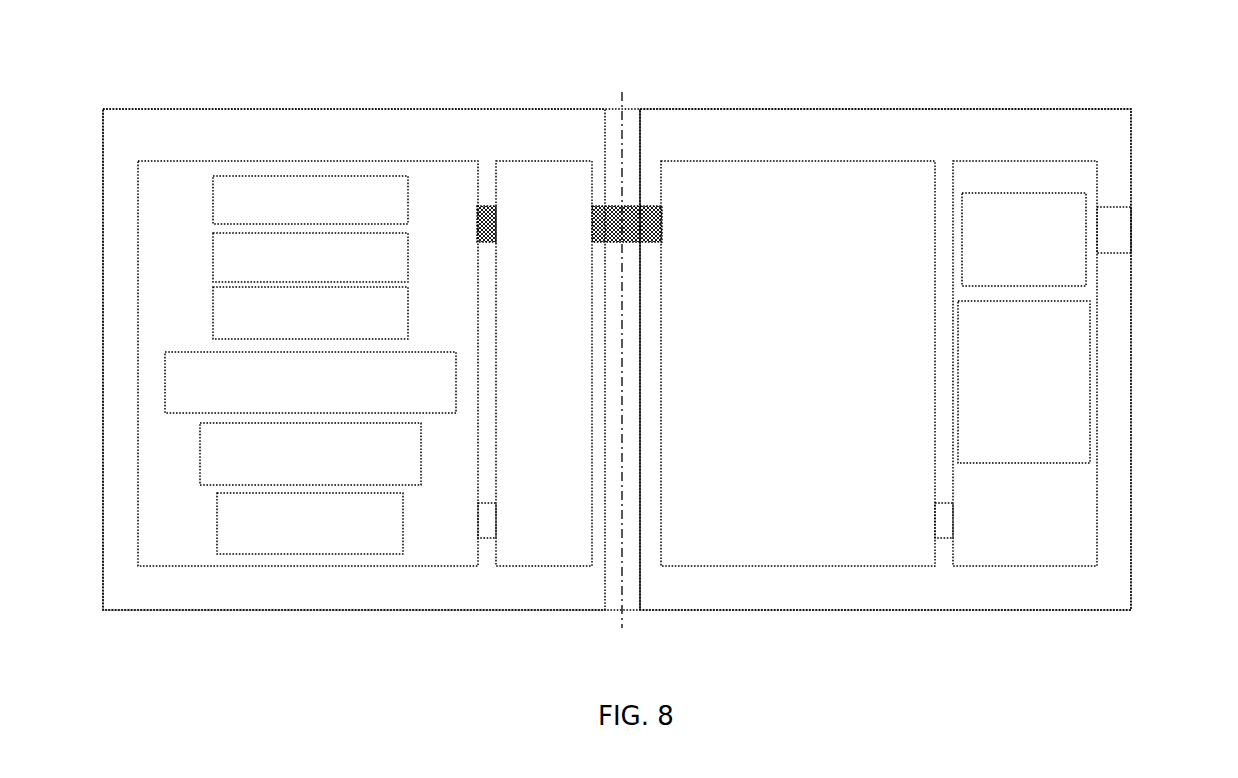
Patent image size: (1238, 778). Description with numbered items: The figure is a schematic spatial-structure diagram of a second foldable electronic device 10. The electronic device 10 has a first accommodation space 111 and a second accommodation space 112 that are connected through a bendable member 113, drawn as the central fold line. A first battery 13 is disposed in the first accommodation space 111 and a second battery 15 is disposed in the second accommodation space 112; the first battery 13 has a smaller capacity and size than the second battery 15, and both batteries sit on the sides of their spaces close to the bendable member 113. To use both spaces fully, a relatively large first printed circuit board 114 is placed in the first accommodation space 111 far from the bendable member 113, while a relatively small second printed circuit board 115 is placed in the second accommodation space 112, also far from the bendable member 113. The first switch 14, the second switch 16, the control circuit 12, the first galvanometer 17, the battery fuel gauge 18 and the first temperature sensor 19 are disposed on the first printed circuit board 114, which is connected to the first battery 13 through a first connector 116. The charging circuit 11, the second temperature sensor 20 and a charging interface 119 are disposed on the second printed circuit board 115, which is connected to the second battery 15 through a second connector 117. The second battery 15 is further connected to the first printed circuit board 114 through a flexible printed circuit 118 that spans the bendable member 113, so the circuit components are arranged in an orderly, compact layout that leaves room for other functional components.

The electronic device 10 is at (1063, 67).
The charging circuit 11 is at (1024, 239).
The control circuit 12 is at (310, 313).
The first battery 13 is at (544, 363).
The first switch 14 is at (310, 200).
The second battery 15 is at (798, 363).
The second switch 16 is at (310, 257).
The first galvanometer 17 is at (310, 454).
The battery fuel gauge 18 is at (310, 523).
The first temperature sensor 19 is at (310, 382).
The second temperature sensor 20 is at (1024, 382).
The first accommodation space 111 is at (346, 358).
The second accommodation space 112 is at (930, 357).
The bendable member 113 is at (601, 337).
The first printed circuit board 114 is at (282, 305).
The second printed circuit board 115 is at (1007, 305).
The first connector 116 is at (542, 587).
The second connector 117 is at (991, 586).
The flexible printed circuit 118 is at (440, 143).
The charging interface 119 is at (1158, 191).